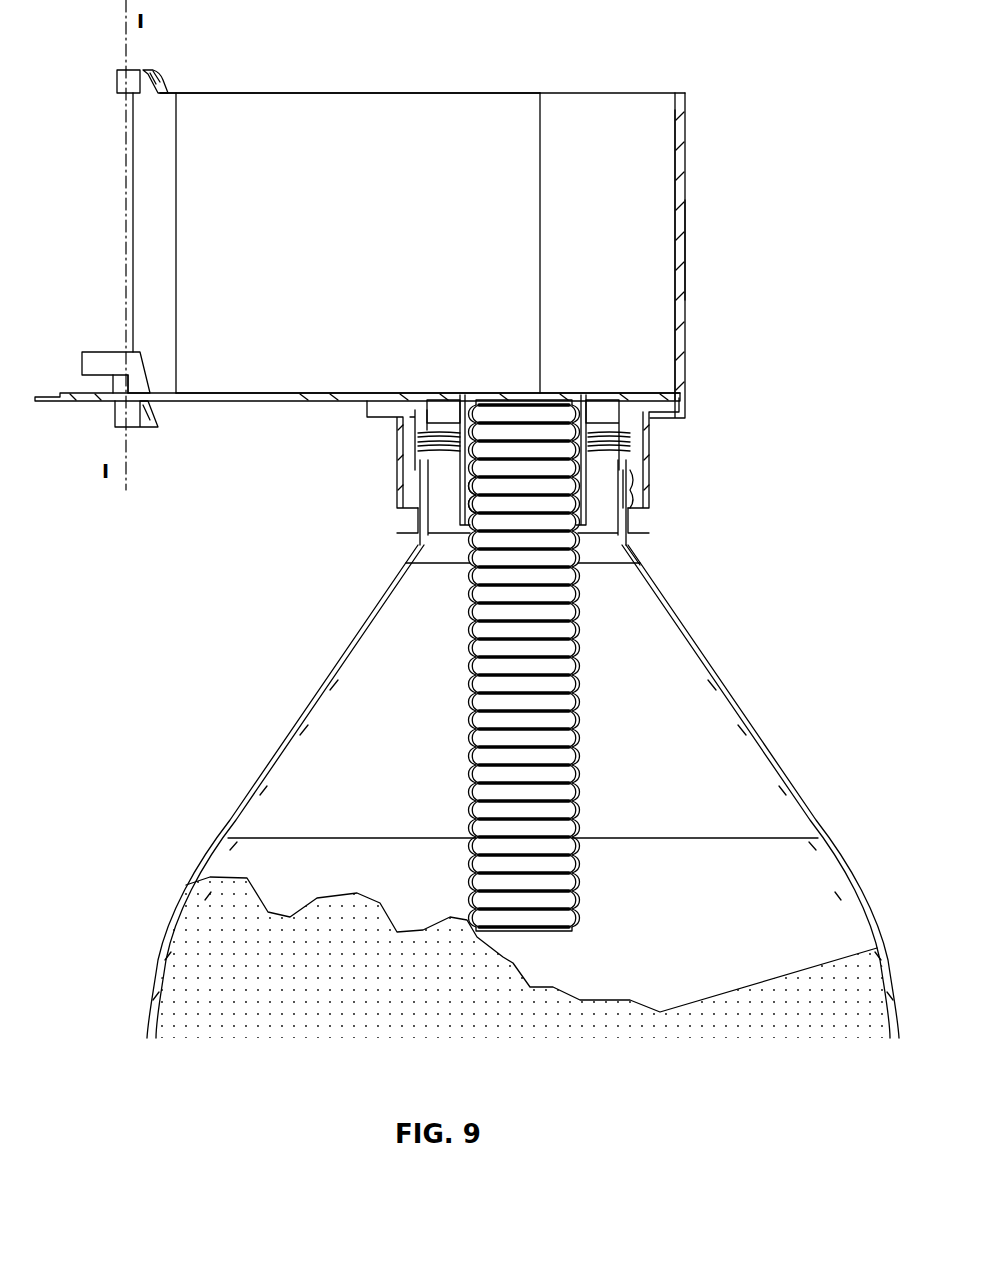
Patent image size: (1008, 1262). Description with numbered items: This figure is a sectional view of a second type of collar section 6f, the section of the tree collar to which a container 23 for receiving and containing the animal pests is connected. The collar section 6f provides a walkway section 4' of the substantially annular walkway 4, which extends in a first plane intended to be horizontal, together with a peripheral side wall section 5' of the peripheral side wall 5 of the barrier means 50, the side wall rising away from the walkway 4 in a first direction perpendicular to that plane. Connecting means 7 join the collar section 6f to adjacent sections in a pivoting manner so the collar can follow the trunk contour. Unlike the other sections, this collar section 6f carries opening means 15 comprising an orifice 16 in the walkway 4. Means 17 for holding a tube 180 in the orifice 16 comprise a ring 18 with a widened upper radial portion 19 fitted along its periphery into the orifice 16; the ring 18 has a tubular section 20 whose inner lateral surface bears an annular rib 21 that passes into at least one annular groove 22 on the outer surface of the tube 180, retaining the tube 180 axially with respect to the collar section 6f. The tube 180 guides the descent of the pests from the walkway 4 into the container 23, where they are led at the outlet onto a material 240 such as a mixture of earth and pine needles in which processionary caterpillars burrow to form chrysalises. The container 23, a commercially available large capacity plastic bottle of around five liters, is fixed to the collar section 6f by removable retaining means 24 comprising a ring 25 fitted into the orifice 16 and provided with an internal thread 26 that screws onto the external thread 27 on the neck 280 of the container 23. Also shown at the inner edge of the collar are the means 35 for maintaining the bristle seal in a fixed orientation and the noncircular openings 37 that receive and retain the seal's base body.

The substantially annular walkway 4 is at (357, 360).
The walkway section 4' is at (428, 363).
The peripheral side wall 5 is at (431, 226).
The peripheral side wall section 5' is at (705, 237).
The collar section 6f is at (690, 145).
The connecting means 7 is at (172, 70).
The opening means 15 is at (503, 340).
The orifice 16 is at (388, 418).
The means for holding a tube 17 is at (567, 385).
The ring 18 is at (462, 392).
The widened upper radial portion 19 is at (427, 450).
The tubular section 20 is at (583, 520).
The annular rib 21 is at (462, 485).
The annular groove 22 is at (480, 480).
The container 23 is at (228, 825).
The removable retaining means 24 is at (692, 465).
The ring 25 is at (410, 500).
The internal thread 26 is at (640, 478).
The external thread 27 is at (628, 515).
The means for maintaining the seal 35 is at (120, 350).
The openings 37 is at (100, 387).
The barrier means 50 is at (522, 78).
The tube 180 is at (468, 827).
The material 240 is at (404, 996).
The neck 280 is at (622, 548).